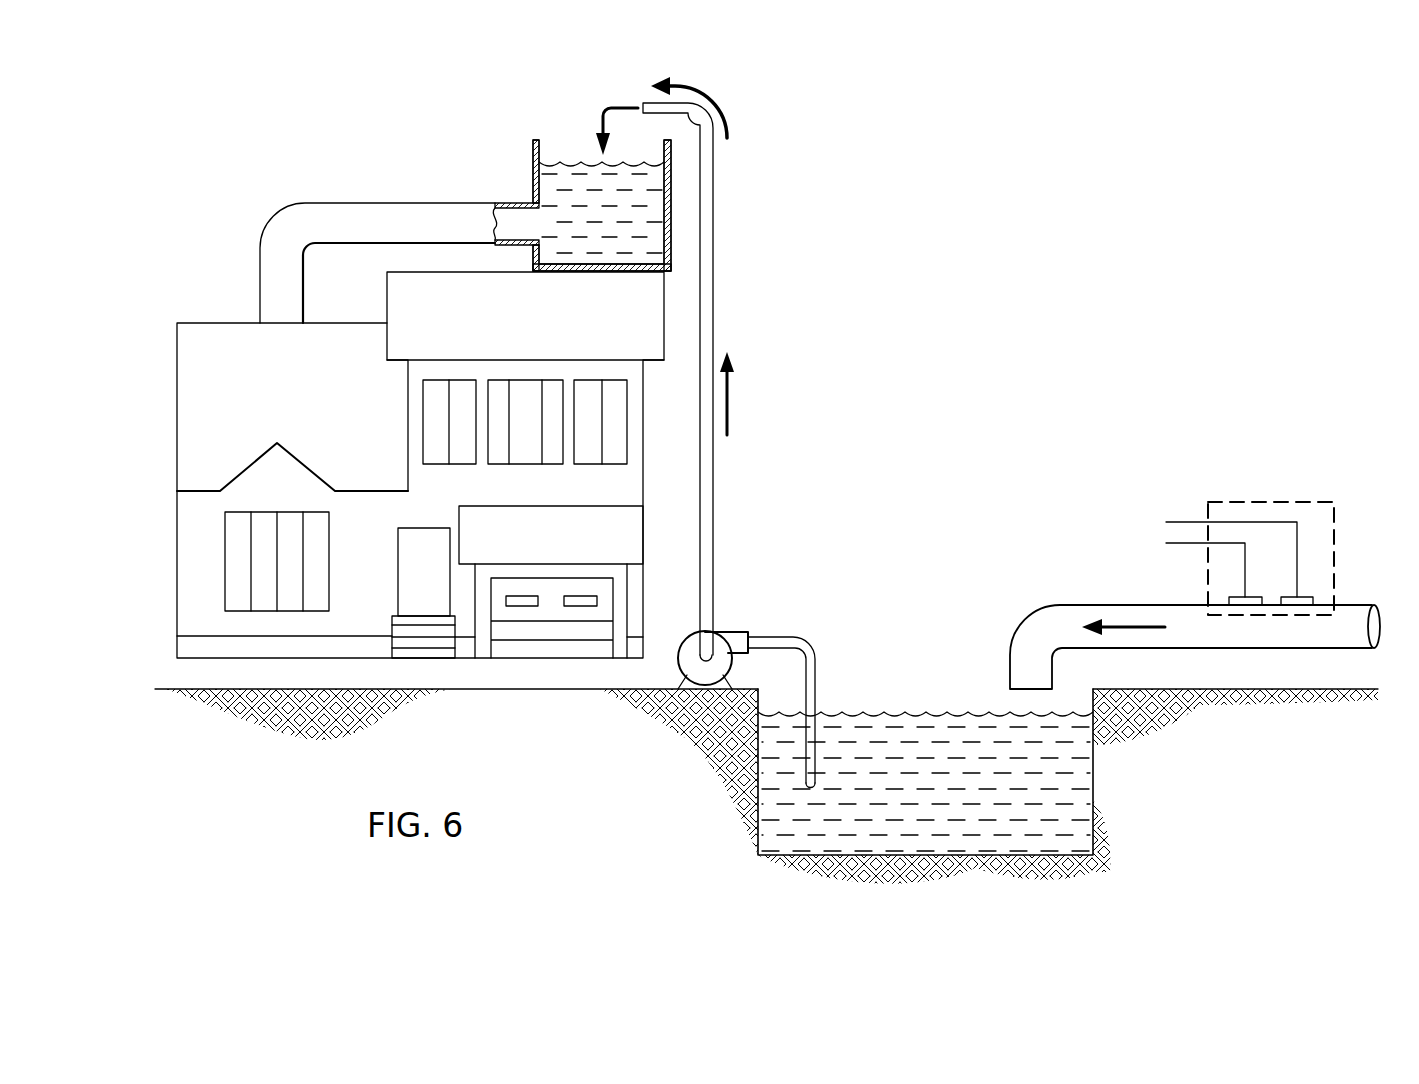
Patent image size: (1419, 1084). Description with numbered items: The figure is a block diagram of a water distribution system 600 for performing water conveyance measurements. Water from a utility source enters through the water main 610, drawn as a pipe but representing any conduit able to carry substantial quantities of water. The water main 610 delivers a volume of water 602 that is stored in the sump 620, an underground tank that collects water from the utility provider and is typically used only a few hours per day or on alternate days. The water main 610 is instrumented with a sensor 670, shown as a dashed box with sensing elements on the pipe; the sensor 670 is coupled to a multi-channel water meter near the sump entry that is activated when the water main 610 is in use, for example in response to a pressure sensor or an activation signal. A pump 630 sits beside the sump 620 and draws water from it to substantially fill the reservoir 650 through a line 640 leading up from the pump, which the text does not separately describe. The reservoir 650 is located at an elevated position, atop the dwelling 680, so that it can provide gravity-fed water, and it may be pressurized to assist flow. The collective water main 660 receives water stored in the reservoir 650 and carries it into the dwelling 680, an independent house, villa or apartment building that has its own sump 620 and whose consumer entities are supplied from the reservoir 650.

The water distribution system 600 is at (1046, 236).
The volume of water 602 is at (938, 720).
The water main 610 is at (1108, 605).
The sump 620 is at (1092, 762).
The pump 630 is at (738, 630).
The riser pipe 640 is at (713, 302).
The reservoir 650 is at (533, 180).
The collective water main 660 is at (405, 200).
The sensor 670 is at (1289, 492).
The dwelling 680 is at (213, 322).